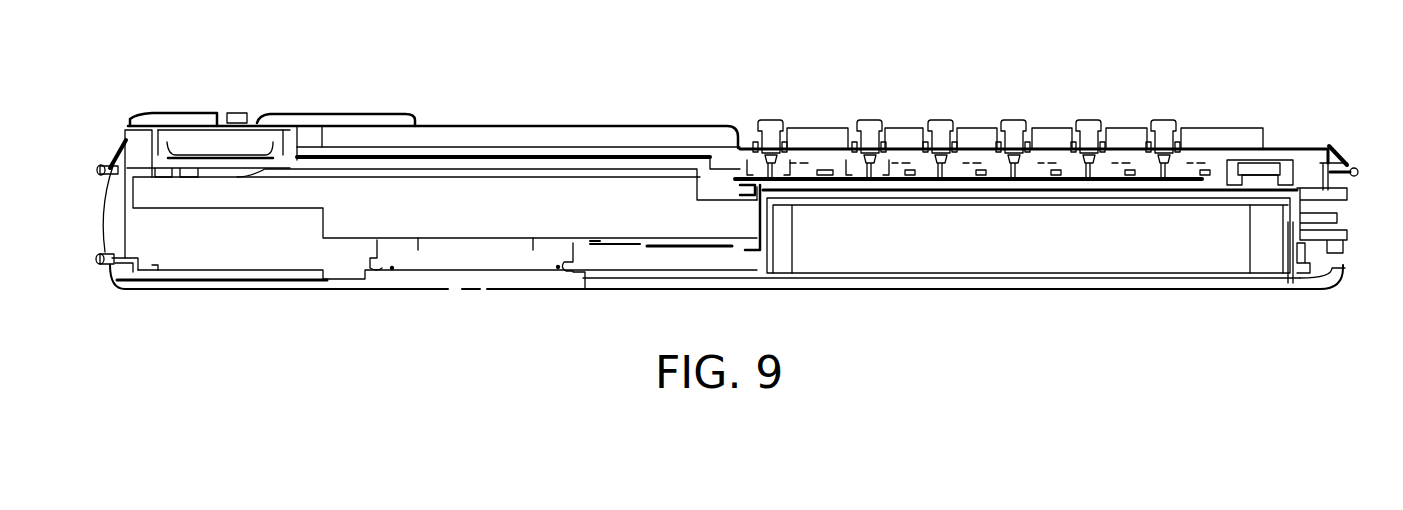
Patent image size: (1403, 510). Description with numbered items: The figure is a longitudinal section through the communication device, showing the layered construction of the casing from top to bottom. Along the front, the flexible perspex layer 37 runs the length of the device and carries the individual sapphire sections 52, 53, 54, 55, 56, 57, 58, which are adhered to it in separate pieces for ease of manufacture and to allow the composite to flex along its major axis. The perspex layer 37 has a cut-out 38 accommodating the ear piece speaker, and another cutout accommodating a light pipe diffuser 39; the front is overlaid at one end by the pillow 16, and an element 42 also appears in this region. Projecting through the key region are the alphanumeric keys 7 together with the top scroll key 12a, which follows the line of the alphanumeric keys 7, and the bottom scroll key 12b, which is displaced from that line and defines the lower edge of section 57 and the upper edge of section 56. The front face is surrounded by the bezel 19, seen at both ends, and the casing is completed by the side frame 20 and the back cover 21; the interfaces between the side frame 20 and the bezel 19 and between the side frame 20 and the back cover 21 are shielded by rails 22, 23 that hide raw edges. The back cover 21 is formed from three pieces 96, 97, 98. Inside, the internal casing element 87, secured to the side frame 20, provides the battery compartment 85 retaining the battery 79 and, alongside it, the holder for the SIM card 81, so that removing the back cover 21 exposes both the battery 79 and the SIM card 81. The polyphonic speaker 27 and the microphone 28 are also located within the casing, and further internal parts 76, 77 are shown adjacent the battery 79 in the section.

The alphanumeric keys 7 is at (942, 120).
The top scroll key 12a is at (772, 120).
The bottom scroll key 12b is at (869, 120).
The pillow 16 is at (342, 148).
The bezel 19 is at (124, 150).
The side frame 20 is at (118, 244).
The back cover 21 is at (1020, 289).
The rail 22 is at (103, 168).
The rail 23 is at (102, 262).
The polyphonic speaker 27 is at (506, 258).
The microphone 28 is at (1272, 167).
The perspex layer 37 is at (497, 148).
The cut-out 38 is at (220, 127).
The light pipe diffuser 39 is at (321, 150).
The cover panel 42 is at (340, 150).
The section 52 is at (1222, 128).
The section 53 is at (1127, 128).
The section 54 is at (1052, 128).
The section 55 is at (979, 128).
The section 56 is at (904, 128).
The section 57 is at (820, 128).
The section 58 is at (685, 133).
The circuit board 76 is at (1213, 162).
The partition 77 is at (1252, 198).
The battery 79 is at (1110, 260).
The SIM card 81 is at (690, 250).
The battery compartment 85 is at (1293, 261).
The internal casing element 87 is at (746, 255).
The back cover piece 96 is at (220, 290).
The back cover piece 97 is at (862, 290).
The back cover piece 98 is at (572, 290).